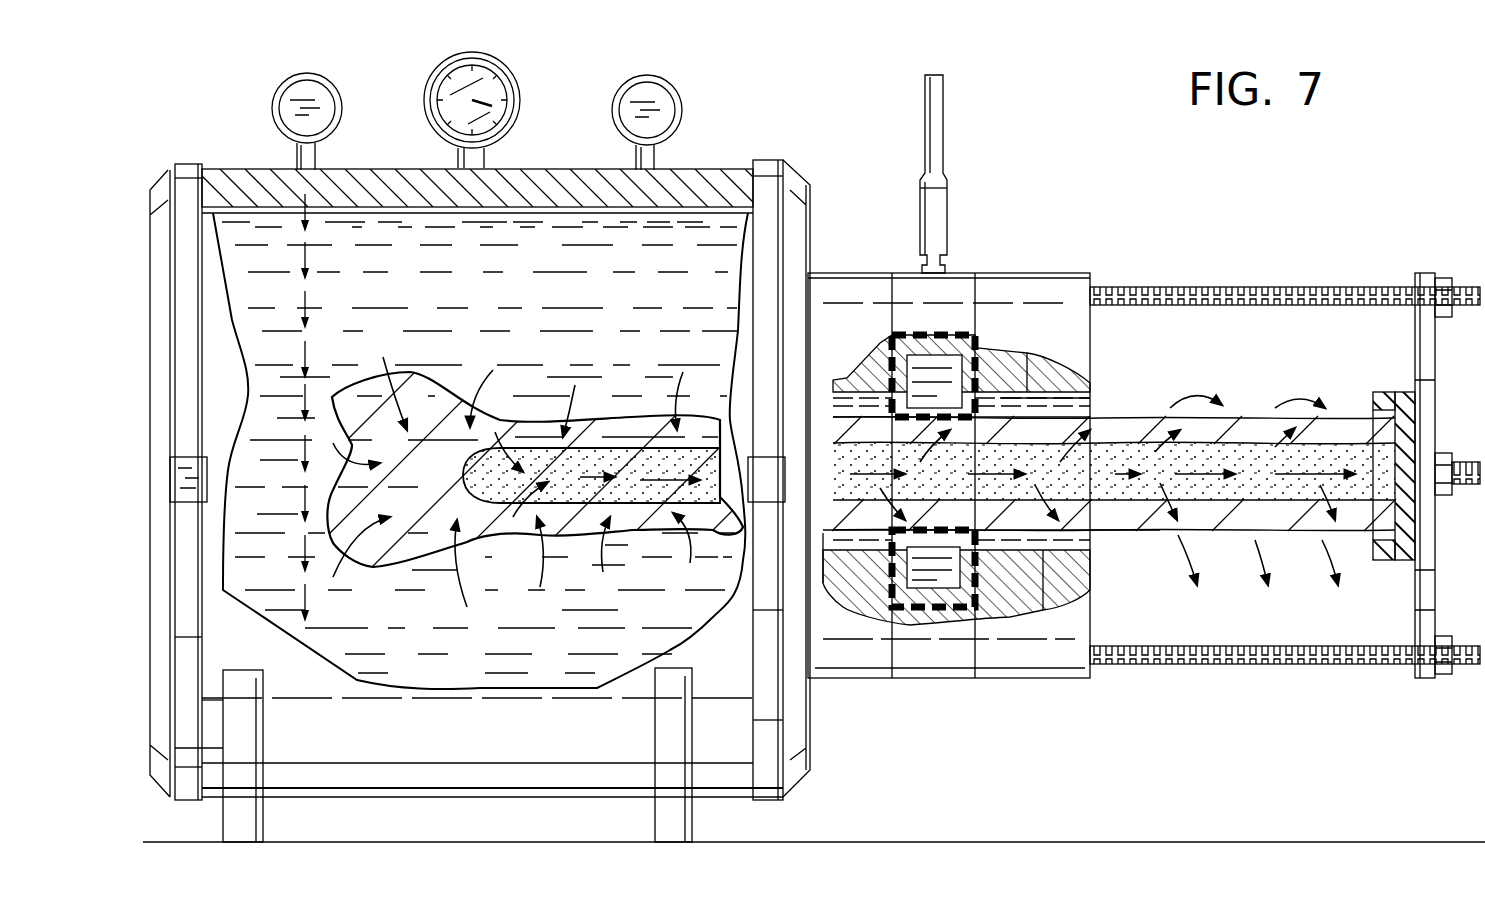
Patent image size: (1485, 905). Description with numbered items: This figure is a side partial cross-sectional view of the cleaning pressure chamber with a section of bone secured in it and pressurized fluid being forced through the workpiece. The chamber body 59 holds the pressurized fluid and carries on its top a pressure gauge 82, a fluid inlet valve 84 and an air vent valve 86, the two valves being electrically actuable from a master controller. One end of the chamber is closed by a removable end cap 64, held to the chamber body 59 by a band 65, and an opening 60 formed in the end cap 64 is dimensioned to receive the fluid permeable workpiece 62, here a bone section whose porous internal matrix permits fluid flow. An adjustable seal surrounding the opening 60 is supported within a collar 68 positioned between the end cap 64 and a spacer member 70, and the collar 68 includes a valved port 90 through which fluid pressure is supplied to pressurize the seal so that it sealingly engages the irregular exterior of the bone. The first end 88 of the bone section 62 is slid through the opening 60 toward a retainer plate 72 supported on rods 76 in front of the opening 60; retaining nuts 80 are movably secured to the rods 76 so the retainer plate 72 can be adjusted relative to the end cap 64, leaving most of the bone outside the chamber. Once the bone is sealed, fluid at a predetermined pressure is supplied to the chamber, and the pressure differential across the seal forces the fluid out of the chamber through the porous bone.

The chamber body 59 is at (698, 168).
The opening 60 is at (1092, 405).
The fluid permeable workpiece 62 is at (1113, 530).
The removable end cap 64 is at (805, 195).
The band 65 is at (768, 780).
The collar 68 is at (960, 283).
The spacer member 70 is at (1032, 660).
The retainer plate 72 is at (1425, 273).
The rods 76 is at (1122, 287).
The retaining nuts 80 is at (1440, 675).
The pressure gauge 82 is at (425, 105).
The fluid inlet valve 84 is at (272, 115).
The air vent valve 86 is at (610, 115).
The first end 88 is at (1250, 418).
The valved port 90 is at (925, 262).